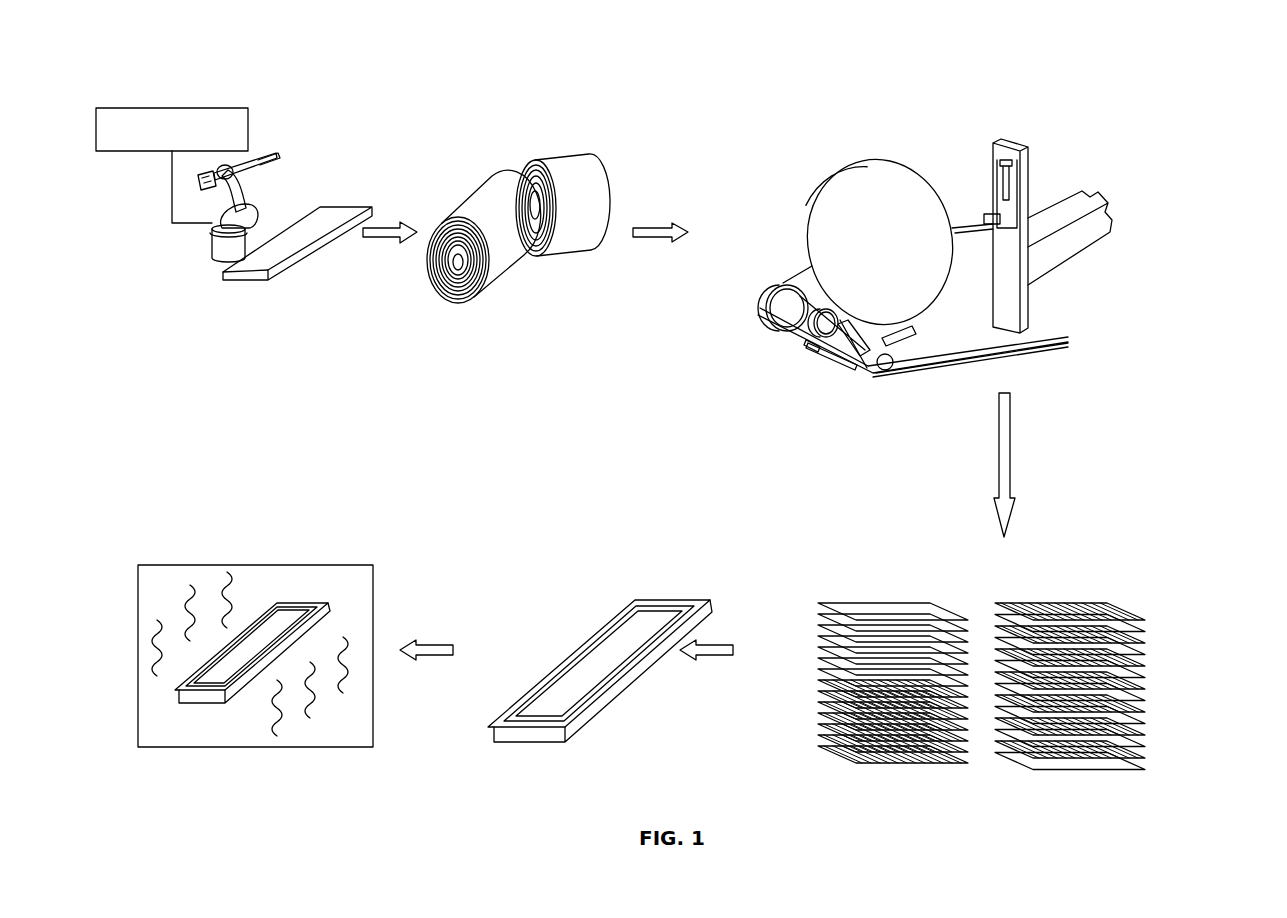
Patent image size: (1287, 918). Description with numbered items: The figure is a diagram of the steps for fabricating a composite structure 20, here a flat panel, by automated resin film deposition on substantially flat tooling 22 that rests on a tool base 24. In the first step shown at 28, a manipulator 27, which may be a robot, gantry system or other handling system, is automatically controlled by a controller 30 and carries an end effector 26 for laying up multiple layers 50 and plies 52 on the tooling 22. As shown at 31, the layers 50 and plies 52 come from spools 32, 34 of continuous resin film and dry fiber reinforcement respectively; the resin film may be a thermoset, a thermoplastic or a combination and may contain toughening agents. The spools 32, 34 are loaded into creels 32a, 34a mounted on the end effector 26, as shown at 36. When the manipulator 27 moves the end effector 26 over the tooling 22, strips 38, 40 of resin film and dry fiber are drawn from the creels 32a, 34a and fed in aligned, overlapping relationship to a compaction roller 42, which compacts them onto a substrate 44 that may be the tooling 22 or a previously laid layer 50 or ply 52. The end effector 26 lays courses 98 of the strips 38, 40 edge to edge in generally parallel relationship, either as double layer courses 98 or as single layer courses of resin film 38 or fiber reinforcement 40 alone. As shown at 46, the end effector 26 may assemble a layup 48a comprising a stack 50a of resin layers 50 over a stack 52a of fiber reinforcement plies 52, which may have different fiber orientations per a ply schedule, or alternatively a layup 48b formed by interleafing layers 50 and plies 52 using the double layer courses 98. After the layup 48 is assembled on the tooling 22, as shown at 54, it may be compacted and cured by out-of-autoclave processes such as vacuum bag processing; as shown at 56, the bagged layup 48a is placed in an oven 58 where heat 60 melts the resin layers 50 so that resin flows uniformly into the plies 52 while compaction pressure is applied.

The composite structure 20 is at (242, 653).
The tooling 22 is at (325, 213).
The tool base 24 is at (247, 273).
The end effector 26 is at (1032, 211).
The manipulator 27 is at (217, 243).
The manipulator step 28 is at (312, 146).
The controller 30 is at (172, 108).
The spool loading step 31 is at (545, 189).
The spool of resin film 32 is at (482, 210).
The resin film creel 32a is at (780, 306).
The spool of dry fiber reinforcement 34 is at (588, 181).
The fiber reinforcement creel 34a is at (897, 198).
The end effector layup step 36 is at (920, 264).
The resin film strip 38 is at (800, 352).
The dry fiber strip 40 is at (840, 175).
The compaction roller 42 is at (886, 370).
The substrate 44 is at (1066, 313).
The layup assembly step 46 is at (984, 640).
The layup 48 is at (639, 592).
The stacked layup 48a is at (863, 640).
The interleafed layup 48b is at (1098, 583).
The resin layer 50 is at (853, 605).
The stack of resin layers 50a is at (808, 595).
The fiber reinforcement ply 52 is at (878, 735).
The stack of fiber reinforcement plies 52a is at (808, 680).
The assembled layup step 54 is at (675, 578).
The curing step 56 is at (288, 666).
The oven 58 is at (205, 723).
The heat 60 is at (312, 698).
The course 98 is at (1033, 355).